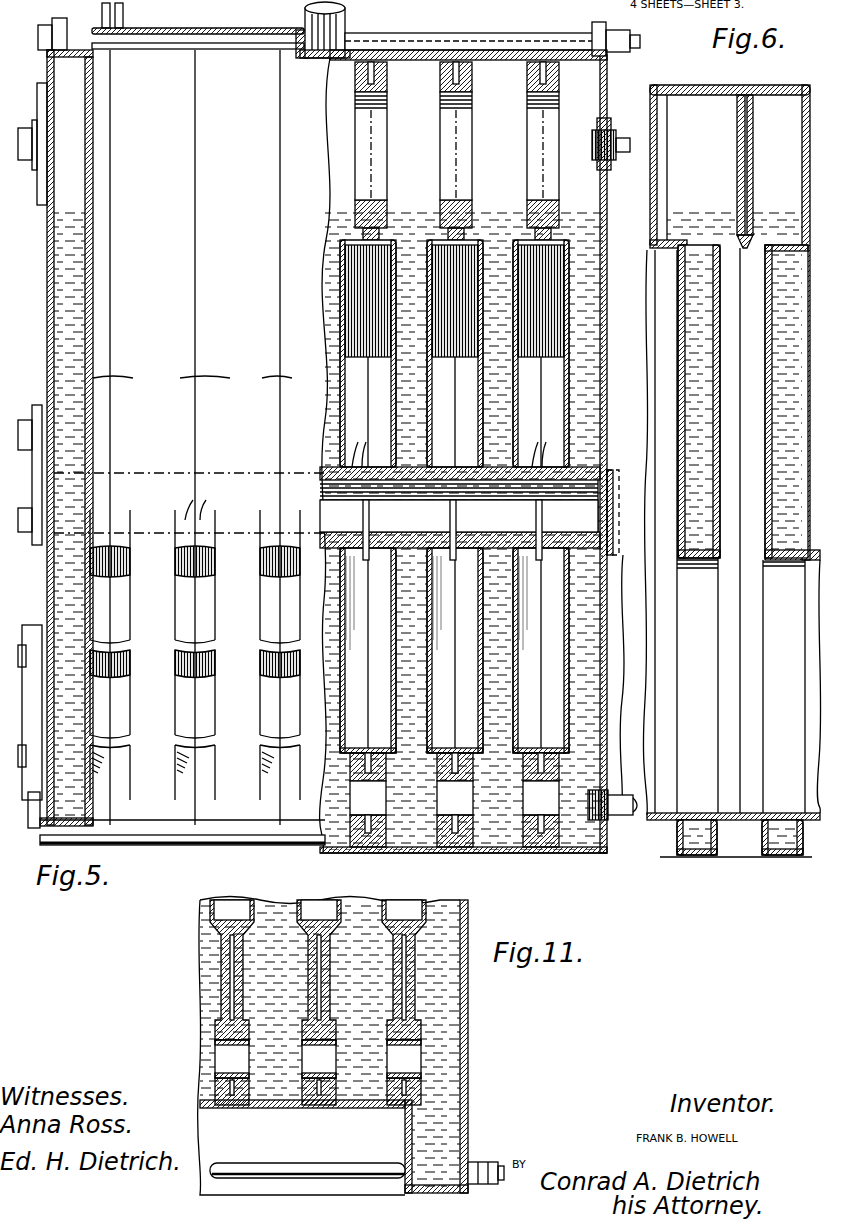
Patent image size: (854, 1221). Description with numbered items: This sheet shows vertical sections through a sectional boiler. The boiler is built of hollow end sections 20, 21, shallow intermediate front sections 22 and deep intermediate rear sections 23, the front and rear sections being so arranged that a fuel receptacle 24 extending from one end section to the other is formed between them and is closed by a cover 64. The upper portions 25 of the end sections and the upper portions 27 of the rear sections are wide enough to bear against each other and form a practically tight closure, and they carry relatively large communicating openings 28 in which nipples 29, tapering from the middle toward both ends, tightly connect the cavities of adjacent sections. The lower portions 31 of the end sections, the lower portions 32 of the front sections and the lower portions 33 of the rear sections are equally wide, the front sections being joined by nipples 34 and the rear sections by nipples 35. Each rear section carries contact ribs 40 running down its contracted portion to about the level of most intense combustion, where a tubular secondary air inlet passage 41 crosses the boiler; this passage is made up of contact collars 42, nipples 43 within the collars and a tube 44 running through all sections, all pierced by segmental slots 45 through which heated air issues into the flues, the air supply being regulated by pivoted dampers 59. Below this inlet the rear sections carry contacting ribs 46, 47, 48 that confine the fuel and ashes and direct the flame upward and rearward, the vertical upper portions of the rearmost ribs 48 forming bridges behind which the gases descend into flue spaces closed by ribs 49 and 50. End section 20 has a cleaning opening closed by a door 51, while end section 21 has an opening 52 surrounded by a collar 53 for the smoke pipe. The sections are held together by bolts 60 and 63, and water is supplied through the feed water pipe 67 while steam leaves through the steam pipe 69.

In FIG. 5, the end section 20 is at (47, 303).
In FIG. 5, the end section 21 is at (609, 86).
In FIG. 11, the end section 21 is at (468, 1043).
In FIG. 11, the intermediate front section 22 is at (335, 905).
In FIG. 5, the intermediate rear section 23 is at (505, 50).
In FIG. 6, the intermediate rear section 23 is at (740, 95).
In FIG. 5, the fuel receptacle 24 is at (52, 381).
In FIG. 5, the upper portion of end section 25 is at (600, 88).
In FIG. 6, the upper portion of end section 25 is at (802, 122).
In FIG. 5, the upper portion of rear section 27 is at (457, 131).
In FIG. 5, the communicating opening 28 is at (433, 207).
In FIG. 5, the nipple 29 is at (472, 153).
In FIG. 5, the lower portion of end section 31 is at (604, 853).
In FIG. 11, the lower portion of end section 31 is at (468, 1114).
In FIG. 11, the lower portion of front section 32 is at (350, 1108).
In FIG. 5, the lower portion of rear section 33 is at (522, 855).
In FIG. 11, the nipple 34 is at (302, 1054).
In FIG. 5, the nipple 35 is at (530, 792).
In FIG. 5, the contact rib 40 is at (192, 379).
In FIG. 5, the secondary air inlet passage 41 is at (459, 516).
In FIG. 5, the contact collar 42 is at (371, 467).
In FIG. 5, the nipple 43 is at (436, 603).
In FIG. 5, the tube 44 is at (600, 513).
In FIG. 5, the segmental slot 45 is at (544, 519).
In FIG. 5, the contacting rib 46 is at (195, 575).
In FIG. 5, the contacting rib 47 is at (195, 687).
In FIG. 5, the rearmost rib 48 is at (328, 520).
In FIG. 6, the rib 49 is at (680, 440).
In FIG. 6, the rib 50 is at (746, 813).
In FIG. 5, the door 51 is at (36, 625).
In FIG. 6, the opening 52 is at (792, 529).
In FIG. 5, the collar 53 is at (615, 685).
In FIG. 6, the collar 53 is at (792, 573).
In FIG. 5, the pivoted damper 59 is at (619, 470).
In FIG. 5, the bolt 60 is at (445, 33).
In FIG. 5, the bolt 63 is at (238, 833).
In FIG. 11, the bolt 63 is at (360, 1165).
In FIG. 5, the cover 64 is at (222, 22).
In FIG. 5, the feed water pipe 67 is at (622, 822).
In FIG. 5, the steam pipe 69 is at (348, 12).